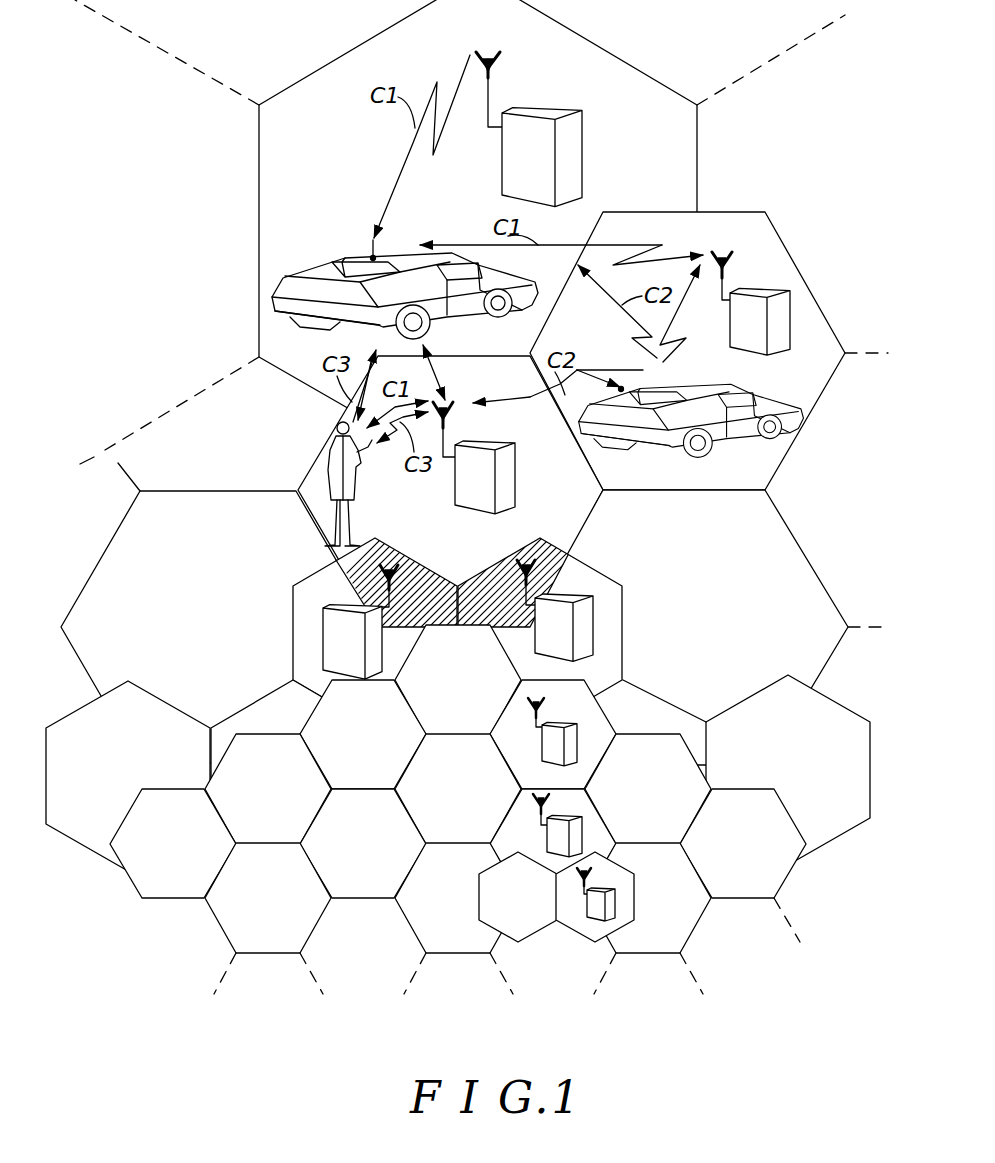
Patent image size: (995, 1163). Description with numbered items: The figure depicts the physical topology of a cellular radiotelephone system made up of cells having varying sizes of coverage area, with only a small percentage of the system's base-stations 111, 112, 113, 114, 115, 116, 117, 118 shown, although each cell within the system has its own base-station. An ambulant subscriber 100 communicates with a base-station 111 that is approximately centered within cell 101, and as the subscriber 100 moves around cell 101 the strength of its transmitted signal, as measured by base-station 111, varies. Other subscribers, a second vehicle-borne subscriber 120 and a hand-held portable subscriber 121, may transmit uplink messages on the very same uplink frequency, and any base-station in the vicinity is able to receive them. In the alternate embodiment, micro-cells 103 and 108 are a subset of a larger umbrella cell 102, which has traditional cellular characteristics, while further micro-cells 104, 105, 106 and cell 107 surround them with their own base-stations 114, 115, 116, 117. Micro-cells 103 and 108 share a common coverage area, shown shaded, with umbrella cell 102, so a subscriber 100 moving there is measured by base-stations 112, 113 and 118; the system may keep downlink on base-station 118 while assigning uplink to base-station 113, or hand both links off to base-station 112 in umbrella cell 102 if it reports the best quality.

The ambulant subscriber 100 is at (350, 256).
The cell 101 is at (478, 241).
The umbrella cell 102 is at (450, 491).
The micro-cell 103 is at (622, 600).
The microcell 104 is at (598, 769).
The microcell 105 is at (600, 808).
The microcell 106 is at (634, 905).
The cell 107 is at (687, 351).
The micro-cell 108 is at (293, 622).
The base-station 111 is at (568, 137).
The base-station 112 is at (512, 510).
The base-station 113 is at (596, 622).
The base-station 114 is at (541, 732).
The base-station 115 is at (546, 846).
The base-station 116 is at (592, 884).
The base-station 117 is at (730, 334).
The base-station 118 is at (345, 606).
The subscriber 120 is at (722, 385).
The subscriber 121 is at (352, 522).